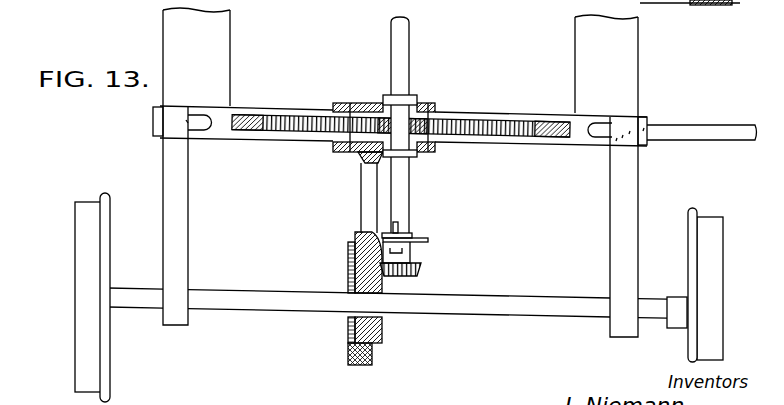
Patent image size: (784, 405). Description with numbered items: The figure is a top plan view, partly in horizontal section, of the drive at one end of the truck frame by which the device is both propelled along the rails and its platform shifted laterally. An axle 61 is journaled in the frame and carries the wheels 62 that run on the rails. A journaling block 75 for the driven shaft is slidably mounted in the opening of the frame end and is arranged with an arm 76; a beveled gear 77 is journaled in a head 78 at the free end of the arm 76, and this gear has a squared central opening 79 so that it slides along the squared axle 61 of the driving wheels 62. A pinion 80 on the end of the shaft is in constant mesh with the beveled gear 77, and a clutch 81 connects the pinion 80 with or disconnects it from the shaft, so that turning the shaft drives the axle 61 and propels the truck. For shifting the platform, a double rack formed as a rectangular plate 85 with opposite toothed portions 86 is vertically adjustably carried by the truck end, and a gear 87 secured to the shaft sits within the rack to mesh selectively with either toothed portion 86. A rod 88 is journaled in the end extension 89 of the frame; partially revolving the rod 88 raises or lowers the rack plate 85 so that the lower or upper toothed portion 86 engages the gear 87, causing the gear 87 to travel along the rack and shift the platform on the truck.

The axle 61 is at (250, 304).
The wheels 62 is at (86, 292).
The journaling block 75 is at (345, 144).
The arm 76 is at (366, 195).
The beveled gear 77 is at (348, 333).
The head 78 is at (367, 367).
The squared central opening 79 is at (363, 287).
The pinion 80 is at (420, 268).
The clutch 81 is at (410, 234).
The rectangular plate 85 is at (252, 112).
The toothed portions 86 is at (515, 137).
The gear 87 is at (413, 118).
The rod 88 is at (604, 135).
The end extension 89 is at (178, 213).